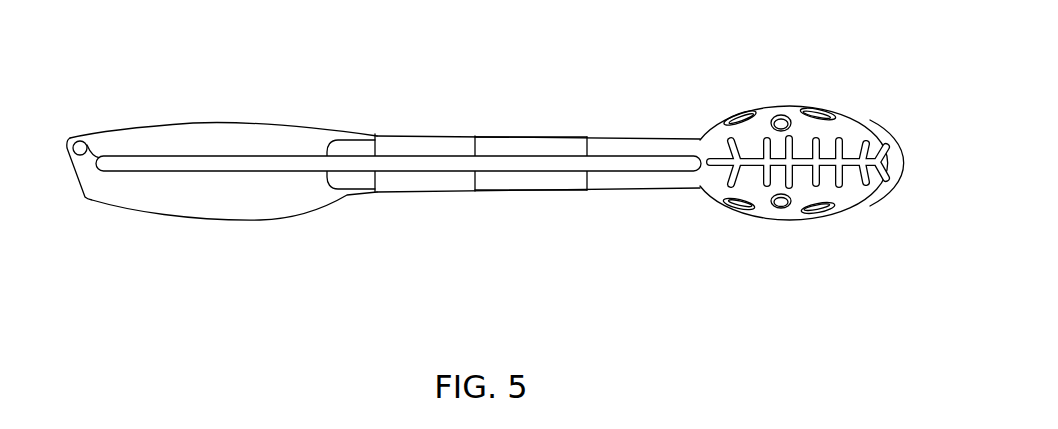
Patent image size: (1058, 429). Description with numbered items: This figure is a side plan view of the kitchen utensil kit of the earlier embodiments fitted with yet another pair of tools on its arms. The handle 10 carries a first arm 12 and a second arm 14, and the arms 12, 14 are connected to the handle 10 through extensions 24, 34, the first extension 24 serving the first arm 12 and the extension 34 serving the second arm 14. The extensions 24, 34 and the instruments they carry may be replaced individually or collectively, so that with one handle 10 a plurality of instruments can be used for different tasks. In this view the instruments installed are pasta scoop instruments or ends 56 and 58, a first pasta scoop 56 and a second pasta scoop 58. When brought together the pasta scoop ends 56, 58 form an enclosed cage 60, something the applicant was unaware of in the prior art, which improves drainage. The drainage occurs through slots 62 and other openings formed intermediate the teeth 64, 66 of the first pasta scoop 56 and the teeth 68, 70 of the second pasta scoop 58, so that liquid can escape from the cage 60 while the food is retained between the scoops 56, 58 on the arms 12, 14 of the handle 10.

The handle 10 is at (302, 118).
The first arm 12 is at (538, 130).
The second arm 14 is at (498, 205).
The first extension 24 is at (561, 148).
The extension 34 is at (552, 180).
The first pasta scoop 56 is at (878, 132).
The second pasta scoop 58 is at (883, 192).
The enclosed cage 60 is at (866, 98).
The slots 62 is at (799, 180).
The tooth 64 is at (763, 137).
The tooth 66 is at (825, 110).
The tooth 68 is at (769, 181).
The tooth 70 is at (822, 181).